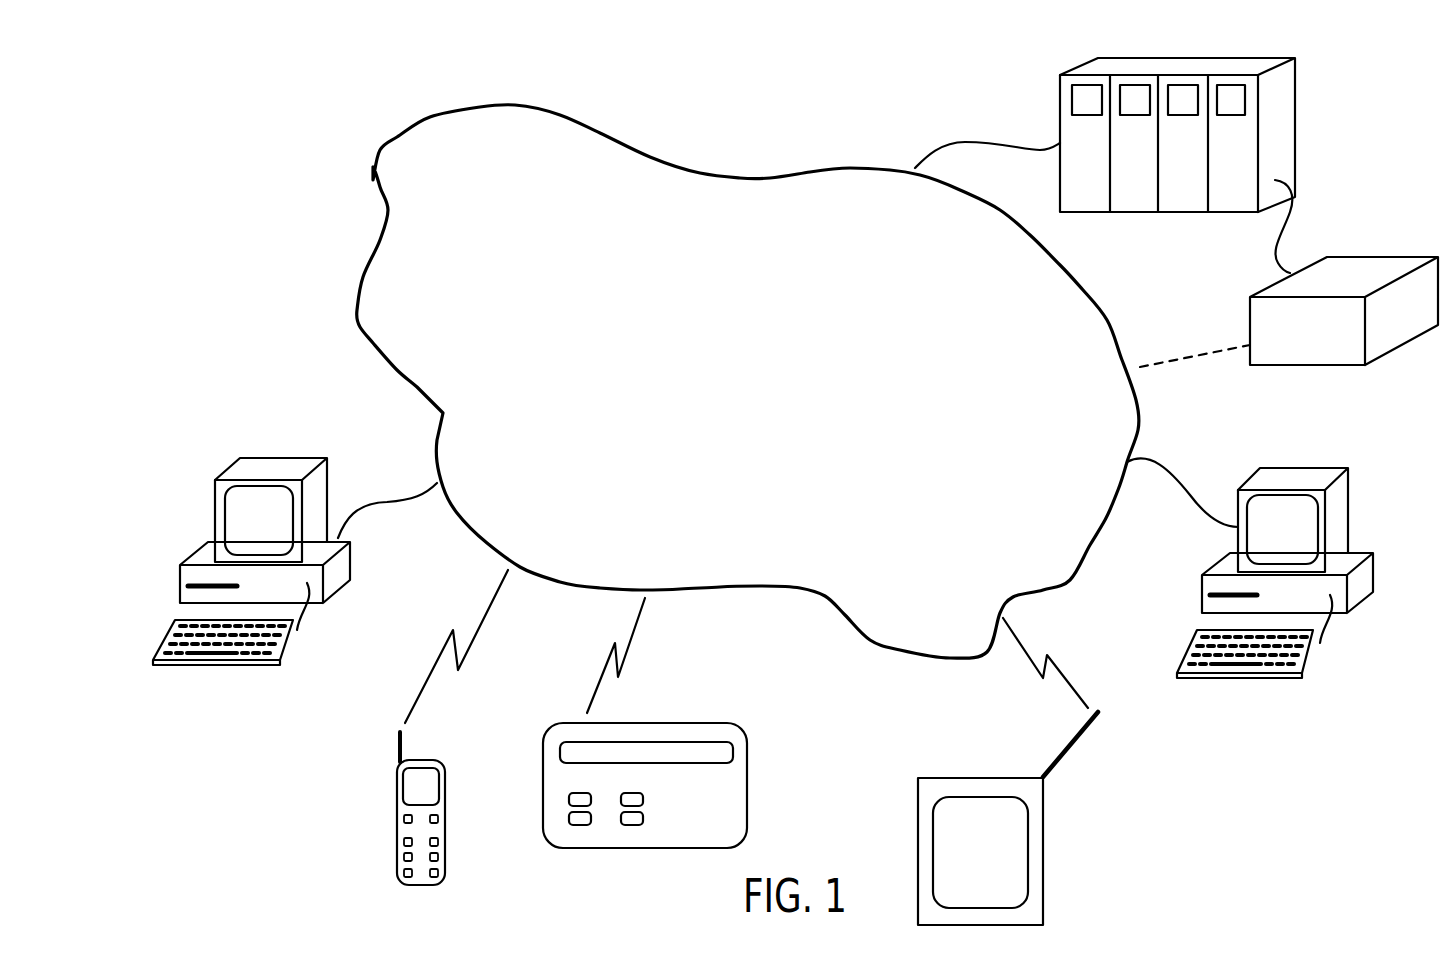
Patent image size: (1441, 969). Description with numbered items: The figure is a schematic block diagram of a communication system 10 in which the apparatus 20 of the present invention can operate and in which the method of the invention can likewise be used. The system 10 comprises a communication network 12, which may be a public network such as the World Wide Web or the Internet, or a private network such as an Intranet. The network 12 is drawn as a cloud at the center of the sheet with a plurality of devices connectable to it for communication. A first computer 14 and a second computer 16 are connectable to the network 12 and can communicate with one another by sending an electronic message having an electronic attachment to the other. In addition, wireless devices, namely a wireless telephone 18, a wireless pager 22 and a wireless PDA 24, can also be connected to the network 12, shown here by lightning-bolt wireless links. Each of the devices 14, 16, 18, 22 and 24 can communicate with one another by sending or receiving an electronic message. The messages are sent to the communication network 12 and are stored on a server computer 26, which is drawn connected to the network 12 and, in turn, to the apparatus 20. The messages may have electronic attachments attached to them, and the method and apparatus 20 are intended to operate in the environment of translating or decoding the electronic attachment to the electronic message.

The communication system 10 is at (316, 108).
The communication network 12 is at (745, 388).
The first computer 14 is at (1373, 595).
The second computer 16 is at (215, 498).
The wireless telephone 18 is at (397, 790).
The apparatus 20 is at (1324, 347).
The wireless pager 22 is at (635, 849).
The wireless PDA 24 is at (1043, 832).
The server computer 26 is at (1298, 112).